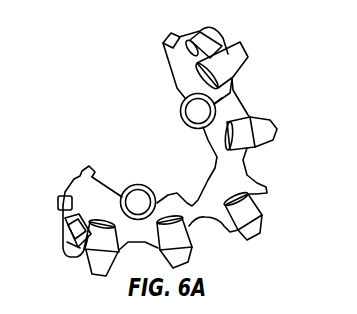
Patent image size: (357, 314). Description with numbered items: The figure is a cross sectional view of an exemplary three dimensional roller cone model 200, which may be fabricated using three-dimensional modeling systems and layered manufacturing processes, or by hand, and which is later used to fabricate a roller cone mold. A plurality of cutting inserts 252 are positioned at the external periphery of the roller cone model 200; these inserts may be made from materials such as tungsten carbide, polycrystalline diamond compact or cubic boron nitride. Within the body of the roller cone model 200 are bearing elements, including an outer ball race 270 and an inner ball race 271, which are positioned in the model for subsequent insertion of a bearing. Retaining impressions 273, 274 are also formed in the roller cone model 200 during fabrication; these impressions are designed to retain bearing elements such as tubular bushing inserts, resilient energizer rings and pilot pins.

The roller cone model 200 is at (236, 176).
The cutting inserts 252 is at (240, 47).
The outer ball race 270 is at (180, 108).
The inner ball race 271 is at (217, 101).
The retaining impression 273 is at (108, 189).
The retaining impression 274 is at (83, 176).